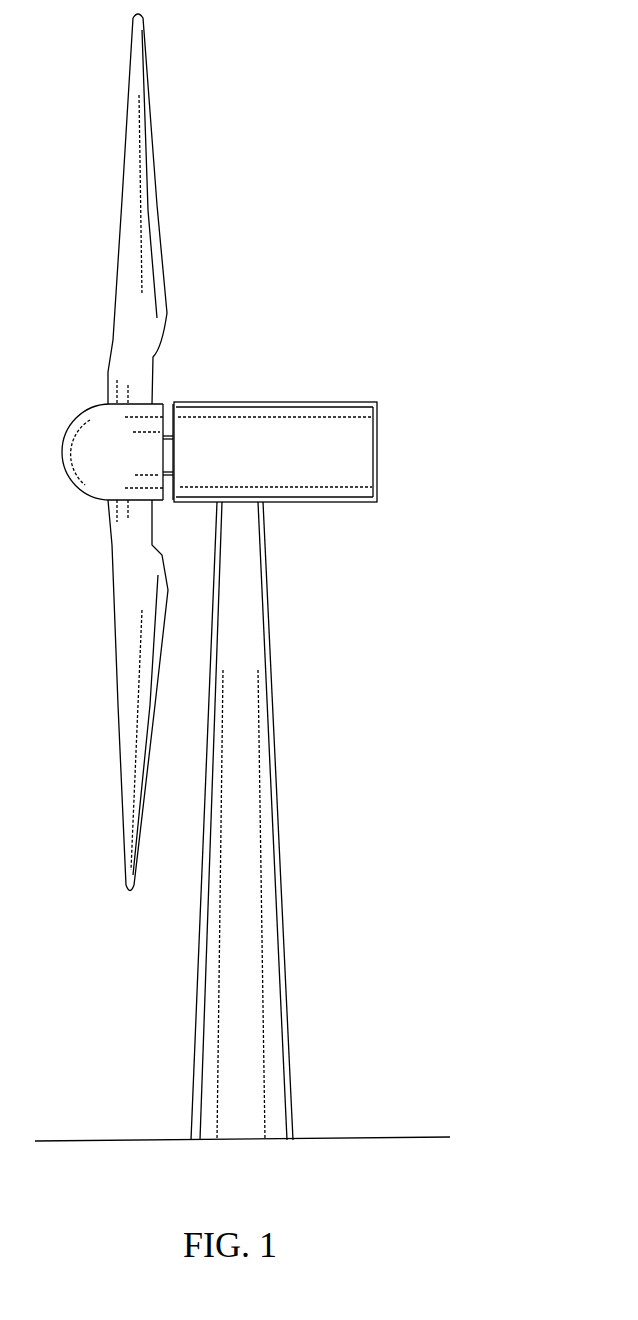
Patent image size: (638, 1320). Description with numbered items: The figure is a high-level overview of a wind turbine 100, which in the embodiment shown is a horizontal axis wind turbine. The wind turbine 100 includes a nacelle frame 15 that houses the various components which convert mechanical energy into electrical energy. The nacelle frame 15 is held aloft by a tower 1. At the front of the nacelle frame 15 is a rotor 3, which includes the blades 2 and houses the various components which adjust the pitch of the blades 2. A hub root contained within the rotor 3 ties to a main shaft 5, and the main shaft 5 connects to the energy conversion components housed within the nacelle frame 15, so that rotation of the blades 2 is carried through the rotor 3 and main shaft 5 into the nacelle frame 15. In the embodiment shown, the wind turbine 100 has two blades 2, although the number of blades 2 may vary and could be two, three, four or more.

The wind turbine 100 is at (414, 219).
The tower 1 is at (267, 808).
The blades 2 is at (123, 175).
The rotor 3 is at (63, 452).
The main shaft 5 is at (166, 434).
The nacelle frame 15 is at (374, 455).